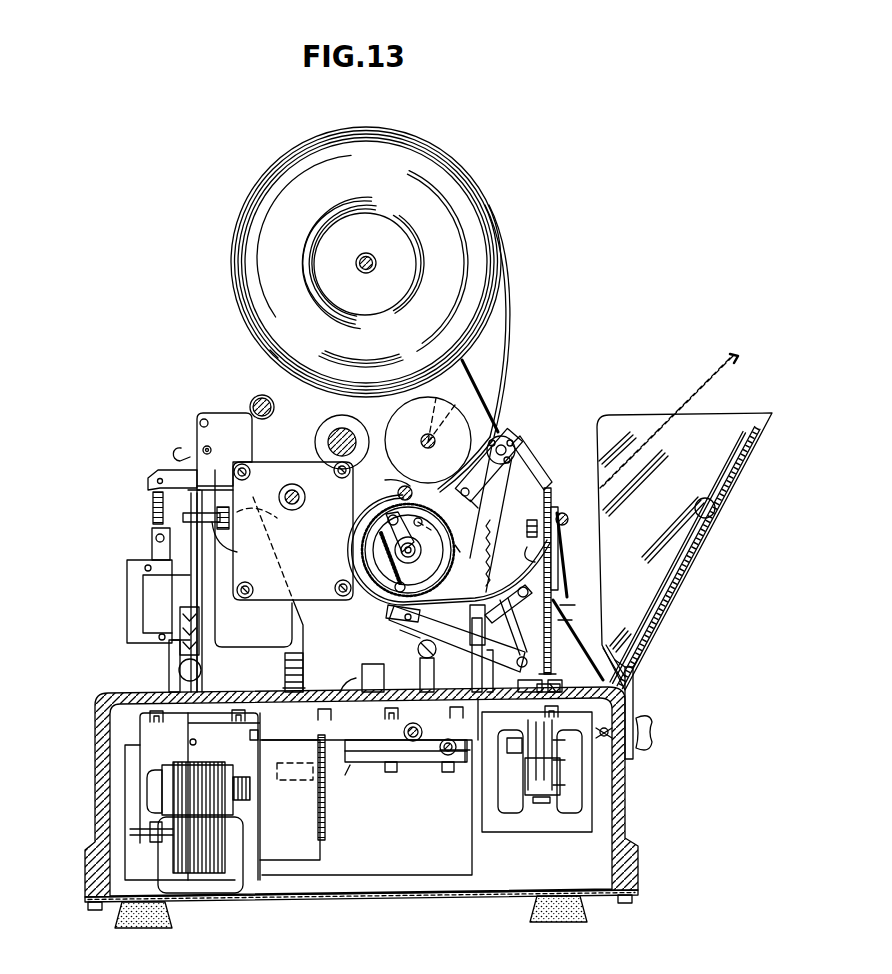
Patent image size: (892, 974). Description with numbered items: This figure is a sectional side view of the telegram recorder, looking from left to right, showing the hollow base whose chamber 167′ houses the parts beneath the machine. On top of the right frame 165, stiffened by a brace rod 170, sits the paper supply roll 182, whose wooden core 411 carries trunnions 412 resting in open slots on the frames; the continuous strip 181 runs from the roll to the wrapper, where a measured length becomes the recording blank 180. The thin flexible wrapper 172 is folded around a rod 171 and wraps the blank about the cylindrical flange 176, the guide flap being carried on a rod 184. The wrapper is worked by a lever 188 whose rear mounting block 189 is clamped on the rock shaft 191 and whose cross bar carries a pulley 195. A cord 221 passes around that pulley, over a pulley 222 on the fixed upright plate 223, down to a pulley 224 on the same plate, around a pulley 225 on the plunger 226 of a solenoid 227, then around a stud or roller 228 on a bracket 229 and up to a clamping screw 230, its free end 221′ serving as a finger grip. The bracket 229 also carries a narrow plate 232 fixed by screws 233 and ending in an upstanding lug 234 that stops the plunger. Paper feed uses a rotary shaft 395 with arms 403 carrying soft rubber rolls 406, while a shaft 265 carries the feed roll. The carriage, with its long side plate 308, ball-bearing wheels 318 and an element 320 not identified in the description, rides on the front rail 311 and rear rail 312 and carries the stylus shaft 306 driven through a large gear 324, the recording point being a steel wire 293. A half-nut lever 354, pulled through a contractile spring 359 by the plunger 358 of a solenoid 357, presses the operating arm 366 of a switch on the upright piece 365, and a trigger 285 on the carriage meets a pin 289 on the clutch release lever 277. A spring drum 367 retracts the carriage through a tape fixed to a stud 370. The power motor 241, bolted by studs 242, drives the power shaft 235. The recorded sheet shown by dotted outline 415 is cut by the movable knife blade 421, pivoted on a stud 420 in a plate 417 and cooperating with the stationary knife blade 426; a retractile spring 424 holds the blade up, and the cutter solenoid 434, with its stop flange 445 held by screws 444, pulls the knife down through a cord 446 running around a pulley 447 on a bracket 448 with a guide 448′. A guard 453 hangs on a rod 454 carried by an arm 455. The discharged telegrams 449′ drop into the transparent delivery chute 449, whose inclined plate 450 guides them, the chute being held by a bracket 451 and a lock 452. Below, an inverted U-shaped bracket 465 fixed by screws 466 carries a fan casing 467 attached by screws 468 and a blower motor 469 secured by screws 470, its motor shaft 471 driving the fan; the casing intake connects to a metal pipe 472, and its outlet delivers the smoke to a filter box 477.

The supply roll 182 is at (296, 202).
The trunnions 412 is at (386, 250).
The core 411 is at (355, 300).
The continuous strip 181 is at (510, 333).
The right frame 165 is at (275, 352).
The brace rod 170 is at (253, 399).
The upright piece 365 is at (236, 424).
The motor 241 is at (328, 575).
The studs 242 is at (240, 465).
The power shaft 235 is at (328, 440).
The stud 420 is at (305, 496).
The side plate 308 is at (205, 578).
The clutch release lever 277 is at (270, 525).
The pin 289 is at (235, 545).
The half-nut lever 354 is at (156, 471).
The operating arm 366 is at (190, 450).
The contractile spring 359 is at (153, 500).
The trigger 285 is at (183, 518).
The plunger 358 is at (155, 550).
The solenoid 357 is at (147, 601).
The ball-bearing wheels 318 is at (190, 640).
The support block 320 is at (172, 657).
The rear rail 312 is at (182, 674).
The stud 370 is at (288, 665).
The spring drum 367 is at (290, 682).
The plunger 226 is at (463, 412).
The shaft 265 is at (421, 442).
The rod 184 is at (406, 480).
The arms 403 is at (472, 478).
The rod 171 is at (398, 497).
The rotary shaft 395 is at (508, 439).
The wrapper 172 is at (398, 514).
The steel wire 293 is at (427, 548).
The stylus shaft 306 is at (406, 565).
The rolls 406 is at (474, 502).
The cylindrical flange 176 is at (462, 539).
The large gear 324 is at (490, 545).
The recording blank 180 is at (542, 560).
The plate 417 is at (530, 474).
The arm 455 is at (541, 490).
The knife blade 421 is at (550, 498).
The guard 453 is at (563, 535).
The rod 454 is at (569, 518).
The inclined plate 450 is at (578, 625).
The stationary knife blade 426 is at (548, 578).
The retractile spring 424 is at (558, 607).
The pulley 195 is at (560, 622).
The clamping screw 230 is at (562, 642).
The delivery chute 449 is at (705, 424).
The discharged telegrams 449′ is at (716, 520).
The recorded sheet 415 is at (674, 392).
The rear mounting block 189 is at (392, 626).
The rock shaft 191 is at (412, 616).
The lever 188 is at (420, 638).
The pulley 222 is at (422, 655).
The upright plate 223 is at (390, 665).
The bracket 229 is at (354, 679).
The cord 221 is at (388, 798).
The cord end 221′ is at (545, 683).
The fan casing 467 is at (93, 786).
The screws 468 is at (255, 875).
The chamber 167′ is at (116, 737).
The screws 466 is at (197, 796).
The motor 469 is at (200, 874).
The inverted U-shaped bracket 465 is at (175, 803).
The screws 470 is at (128, 831).
The solenoid 227 is at (245, 749).
The motor shaft 471 is at (262, 800).
The filter box 477 is at (415, 870).
The pulley 225 is at (390, 715).
The upstanding lug 234 is at (380, 732).
The front rail 311 is at (478, 704).
The narrow plate 232 is at (392, 773).
The metal pipe 472 is at (406, 762).
The stud or roller 228 is at (452, 774).
The pulley 224 is at (456, 780).
The screws 233 is at (466, 790).
The solenoid 434 is at (572, 805).
The screws 444 is at (541, 798).
The upstanding flange 445 is at (530, 790).
The bracket 448 is at (512, 755).
The cord 446 is at (556, 745).
The guide 448′ is at (556, 762).
The pulley 447 is at (556, 788).
The bracket 451 is at (636, 703).
The lock 452 is at (655, 742).